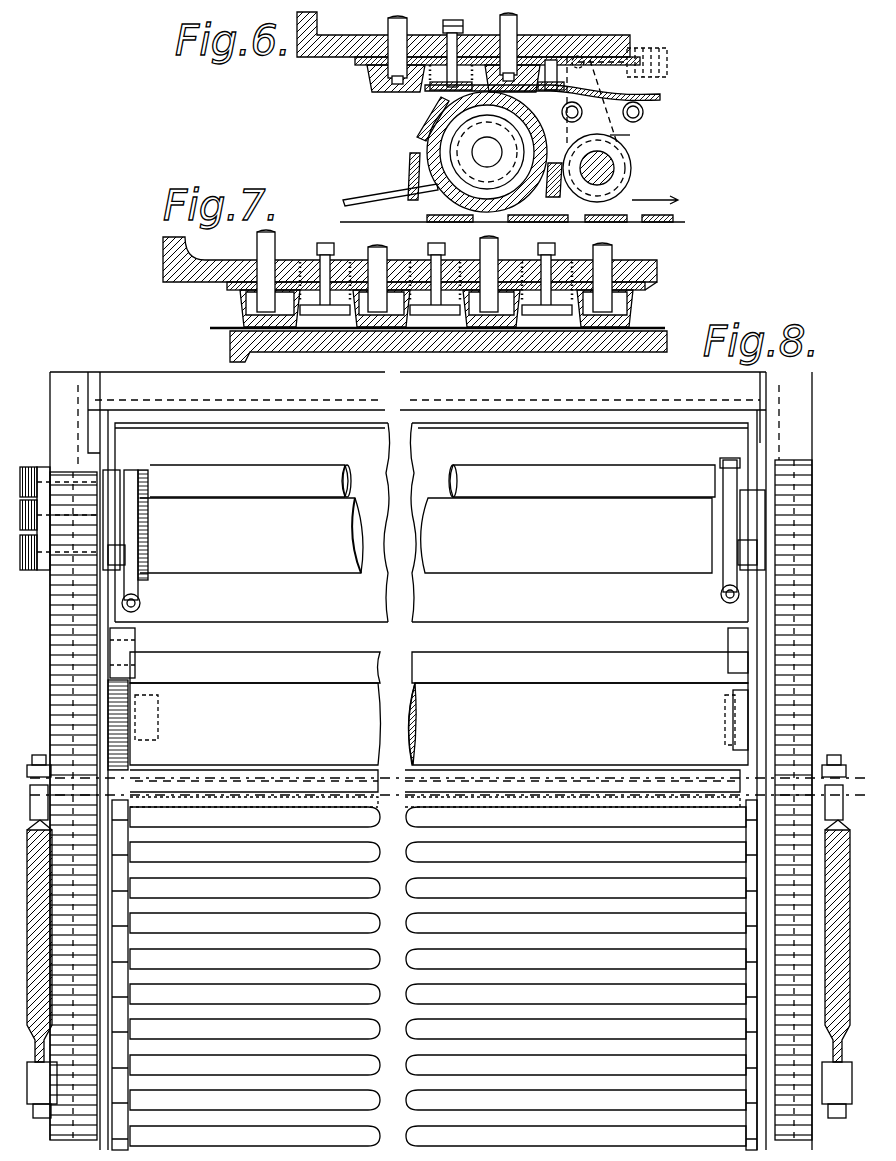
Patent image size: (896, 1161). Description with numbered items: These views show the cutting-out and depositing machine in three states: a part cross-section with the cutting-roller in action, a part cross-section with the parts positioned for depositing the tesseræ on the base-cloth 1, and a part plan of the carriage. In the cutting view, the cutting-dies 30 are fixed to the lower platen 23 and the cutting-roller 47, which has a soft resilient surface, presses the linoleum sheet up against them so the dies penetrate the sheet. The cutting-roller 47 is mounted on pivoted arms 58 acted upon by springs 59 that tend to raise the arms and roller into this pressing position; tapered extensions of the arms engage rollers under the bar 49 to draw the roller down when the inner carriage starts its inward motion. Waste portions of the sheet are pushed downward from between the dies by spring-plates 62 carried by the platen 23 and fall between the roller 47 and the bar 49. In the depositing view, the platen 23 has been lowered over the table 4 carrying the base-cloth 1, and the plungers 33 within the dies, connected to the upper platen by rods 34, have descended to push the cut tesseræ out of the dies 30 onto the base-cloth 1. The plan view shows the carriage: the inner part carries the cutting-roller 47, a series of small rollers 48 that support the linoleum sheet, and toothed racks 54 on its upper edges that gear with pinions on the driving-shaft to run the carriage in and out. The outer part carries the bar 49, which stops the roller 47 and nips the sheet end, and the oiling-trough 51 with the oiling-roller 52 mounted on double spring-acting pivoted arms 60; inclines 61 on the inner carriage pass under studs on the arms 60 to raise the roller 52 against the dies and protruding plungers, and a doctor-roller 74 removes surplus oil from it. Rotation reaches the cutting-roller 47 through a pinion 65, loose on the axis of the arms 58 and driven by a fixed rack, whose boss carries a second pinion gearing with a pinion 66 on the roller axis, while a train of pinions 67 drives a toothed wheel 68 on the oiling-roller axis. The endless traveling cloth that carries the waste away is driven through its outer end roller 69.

In FIG. 7, the base-cloth 1 is at (635, 325).
In FIG. 7, the table 4 is at (500, 352).
In FIG. 6, the lower platen 23 is at (463, 34).
In FIG. 7, the lower platen 23 is at (410, 259).
In FIG. 6, the cutting-dies 30 is at (385, 88).
In FIG. 7, the cutting-dies 30 is at (378, 268).
In FIG. 6, the plungers 33 is at (370, 75).
In FIG. 7, the plungers 33 is at (245, 302).
In FIG. 6, the rods 34 is at (452, 46).
In FIG. 7, the rods 34 is at (272, 255).
In FIG. 6, the cutting-roller 47 is at (425, 146).
In FIG. 8, the cutting-roller 47 is at (439, 724).
In FIG. 8, the small rollers 48 is at (434, 975).
In FIG. 8, the bar 49 is at (439, 667).
In FIG. 8, the oiling-trough 51 is at (340, 430).
In FIG. 8, the oiling-roller 52 is at (426, 535).
In FIG. 8, the toothed racks 54 is at (62, 632).
In FIG. 6, the pivoted arms 58 is at (610, 135).
In FIG. 8, the pivoted arms 58 is at (132, 760).
In FIG. 6, the springs 59 is at (662, 62).
In FIG. 8, the pivoted arms 60 is at (147, 522).
In FIG. 8, the inclines 61 is at (112, 512).
In FIG. 7, the spring-plates 62 is at (325, 312).
In FIG. 8, the pinion 65 is at (50, 768).
In FIG. 8, the pinion 66 is at (150, 708).
In FIG. 8, the train of pinions 67 is at (56, 508).
In FIG. 8, the toothed wheel 68 is at (150, 542).
In FIG. 8, the outer end roller 69 is at (435, 969).
In FIG. 8, the doctor-roller 74 is at (432, 484).